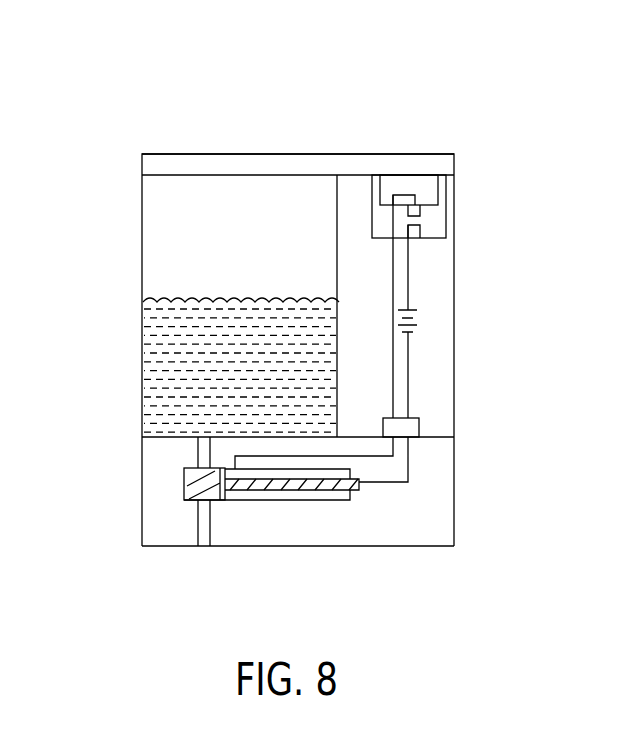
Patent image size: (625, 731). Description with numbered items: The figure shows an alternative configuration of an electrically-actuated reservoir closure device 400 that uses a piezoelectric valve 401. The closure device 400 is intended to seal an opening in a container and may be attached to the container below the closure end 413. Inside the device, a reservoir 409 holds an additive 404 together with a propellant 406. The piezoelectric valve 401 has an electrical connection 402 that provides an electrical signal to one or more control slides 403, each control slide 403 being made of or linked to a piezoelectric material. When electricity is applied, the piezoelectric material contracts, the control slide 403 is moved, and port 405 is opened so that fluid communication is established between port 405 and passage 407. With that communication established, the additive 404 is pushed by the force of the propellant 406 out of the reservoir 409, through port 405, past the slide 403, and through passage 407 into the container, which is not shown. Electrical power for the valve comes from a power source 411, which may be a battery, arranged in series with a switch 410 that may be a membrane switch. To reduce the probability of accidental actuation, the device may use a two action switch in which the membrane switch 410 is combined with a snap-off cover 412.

The electrically-actuated reservoir closure device 400 is at (88, 70).
The piezoelectric valve 401 is at (455, 492).
The electrical connection 402 is at (420, 430).
The control slide 403 is at (184, 484).
The additive 404 is at (133, 356).
The port 405 is at (198, 460).
The propellant 406 is at (148, 249).
The passage 407 is at (212, 533).
The reservoir 409 is at (285, 246).
The switch 410 is at (446, 209).
The power source 411 is at (448, 292).
The snap-off cover 412 is at (298, 160).
The closure end 413 is at (279, 555).